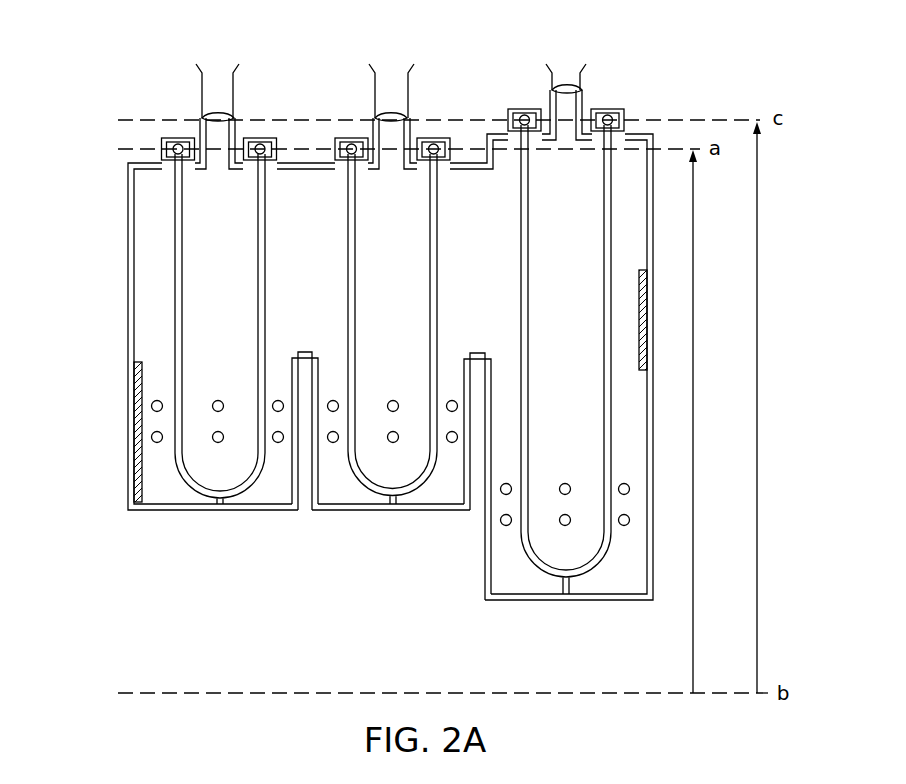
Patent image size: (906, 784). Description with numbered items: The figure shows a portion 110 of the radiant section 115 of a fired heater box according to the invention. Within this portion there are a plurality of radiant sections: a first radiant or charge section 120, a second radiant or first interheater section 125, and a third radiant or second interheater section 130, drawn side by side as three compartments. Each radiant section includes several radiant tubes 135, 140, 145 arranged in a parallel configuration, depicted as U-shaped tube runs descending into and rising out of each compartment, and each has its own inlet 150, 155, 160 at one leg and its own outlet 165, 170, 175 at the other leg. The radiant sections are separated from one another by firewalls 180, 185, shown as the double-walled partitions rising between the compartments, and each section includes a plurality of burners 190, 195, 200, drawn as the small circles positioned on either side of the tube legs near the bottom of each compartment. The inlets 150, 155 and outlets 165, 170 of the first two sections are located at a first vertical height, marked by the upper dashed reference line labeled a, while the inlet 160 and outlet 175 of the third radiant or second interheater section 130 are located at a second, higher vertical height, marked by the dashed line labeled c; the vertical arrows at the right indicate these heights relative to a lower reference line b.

The portion of the radiant section 110 is at (103, 226).
The radiant section 115 is at (107, 330).
The first radiant or charge section 120 is at (199, 462).
The second radiant or first interheater section 125 is at (421, 462).
The third radiant or second interheater section 130 is at (544, 542).
The radiant tubes 135 is at (258, 252).
The radiant tubes 140 is at (430, 239).
The radiant tubes 145 is at (604, 239).
The inlet 150 is at (178, 137).
The inlet 155 is at (351, 137).
The inlet 160 is at (524, 107).
The outlet 165 is at (260, 137).
The outlet 170 is at (433, 137).
The outlet 175 is at (608, 107).
The firewall 180 is at (304, 351).
The firewall 185 is at (487, 352).
The burners 190 is at (278, 400).
The burners 195 is at (333, 400).
The burners 200 is at (501, 524).